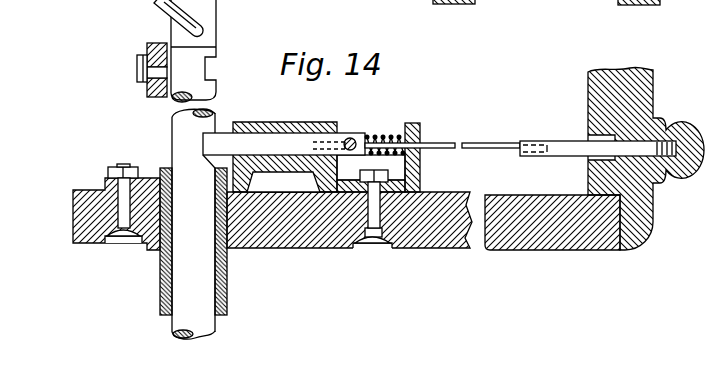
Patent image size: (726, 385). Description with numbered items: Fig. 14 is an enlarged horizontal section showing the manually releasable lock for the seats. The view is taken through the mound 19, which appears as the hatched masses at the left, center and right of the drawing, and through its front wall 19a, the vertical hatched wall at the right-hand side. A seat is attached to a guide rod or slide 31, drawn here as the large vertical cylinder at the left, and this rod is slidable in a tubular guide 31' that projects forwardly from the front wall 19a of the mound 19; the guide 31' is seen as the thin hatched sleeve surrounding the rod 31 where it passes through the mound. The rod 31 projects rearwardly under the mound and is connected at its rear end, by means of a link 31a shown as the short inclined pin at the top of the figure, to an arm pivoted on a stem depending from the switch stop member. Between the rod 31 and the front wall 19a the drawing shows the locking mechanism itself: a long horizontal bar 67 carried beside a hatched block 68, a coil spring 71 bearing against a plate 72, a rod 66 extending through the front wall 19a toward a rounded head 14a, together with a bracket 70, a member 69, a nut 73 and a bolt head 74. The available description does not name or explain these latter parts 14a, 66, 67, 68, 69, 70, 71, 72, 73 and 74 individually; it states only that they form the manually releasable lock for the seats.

The knob / wall portion 14a is at (686, 183).
The mound 19 is at (530, 248).
The front wall 19a is at (318, 249).
The guide rod 31 is at (216, 226).
The tubular guide 31' is at (215, 241).
The link 31a is at (158, 11).
The rod 66 is at (483, 147).
The bar 67 is at (269, 135).
The block 68 is at (322, 123).
The column head 69 is at (174, 133).
The bracket 70 is at (218, 62).
The spring 71 is at (386, 133).
The plate 72 is at (420, 131).
The nut 73 is at (147, 88).
The bolt head 74 is at (138, 65).